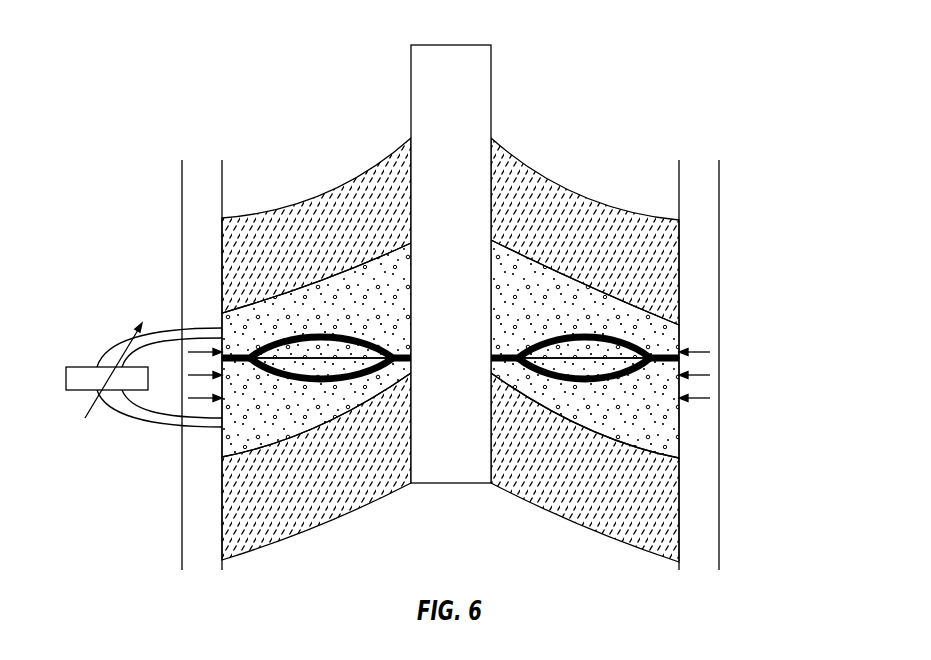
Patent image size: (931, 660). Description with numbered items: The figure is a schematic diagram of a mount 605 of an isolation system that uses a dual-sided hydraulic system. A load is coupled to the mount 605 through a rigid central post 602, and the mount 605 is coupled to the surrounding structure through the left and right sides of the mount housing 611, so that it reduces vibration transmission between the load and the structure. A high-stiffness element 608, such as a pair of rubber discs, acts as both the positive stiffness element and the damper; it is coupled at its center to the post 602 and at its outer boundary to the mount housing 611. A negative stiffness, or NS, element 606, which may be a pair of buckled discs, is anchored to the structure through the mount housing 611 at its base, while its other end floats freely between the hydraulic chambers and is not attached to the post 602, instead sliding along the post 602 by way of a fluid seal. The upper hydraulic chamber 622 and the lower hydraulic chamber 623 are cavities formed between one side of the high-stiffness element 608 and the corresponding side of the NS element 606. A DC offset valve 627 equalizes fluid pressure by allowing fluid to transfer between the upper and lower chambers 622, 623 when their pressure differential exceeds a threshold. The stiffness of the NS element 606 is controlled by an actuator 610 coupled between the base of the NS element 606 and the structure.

The post 602 is at (491, 105).
The mount 605 is at (798, 150).
The NS element 606 is at (260, 350).
The high-stiffness element 608 is at (450, 350).
The actuator 610 is at (700, 399).
The mount housing 611 is at (197, 493).
The upper hydraulic chamber 622 is at (450, 299).
The lower hydraulic chamber 623 is at (450, 408).
The DC offset valve 627 is at (82, 367).